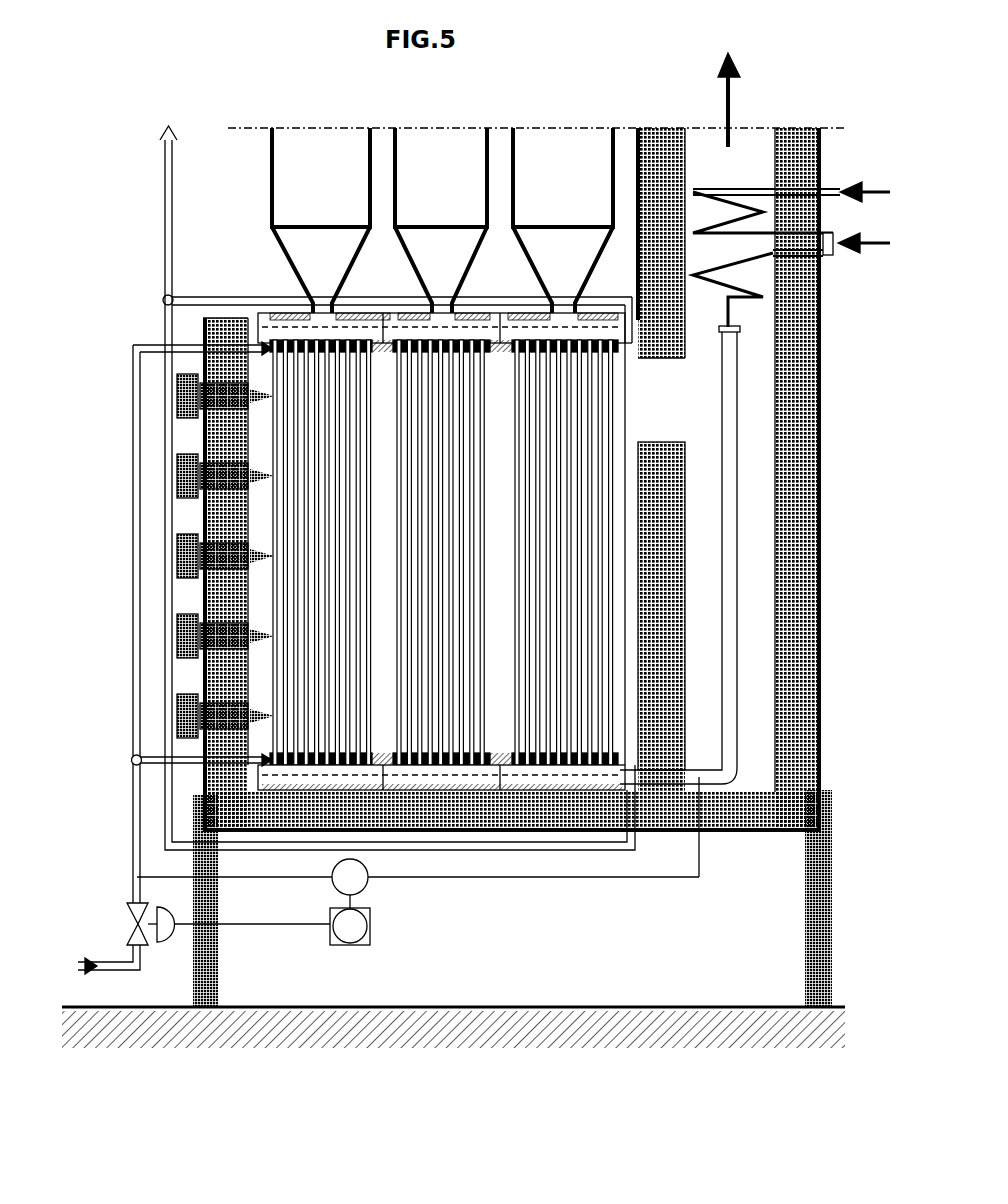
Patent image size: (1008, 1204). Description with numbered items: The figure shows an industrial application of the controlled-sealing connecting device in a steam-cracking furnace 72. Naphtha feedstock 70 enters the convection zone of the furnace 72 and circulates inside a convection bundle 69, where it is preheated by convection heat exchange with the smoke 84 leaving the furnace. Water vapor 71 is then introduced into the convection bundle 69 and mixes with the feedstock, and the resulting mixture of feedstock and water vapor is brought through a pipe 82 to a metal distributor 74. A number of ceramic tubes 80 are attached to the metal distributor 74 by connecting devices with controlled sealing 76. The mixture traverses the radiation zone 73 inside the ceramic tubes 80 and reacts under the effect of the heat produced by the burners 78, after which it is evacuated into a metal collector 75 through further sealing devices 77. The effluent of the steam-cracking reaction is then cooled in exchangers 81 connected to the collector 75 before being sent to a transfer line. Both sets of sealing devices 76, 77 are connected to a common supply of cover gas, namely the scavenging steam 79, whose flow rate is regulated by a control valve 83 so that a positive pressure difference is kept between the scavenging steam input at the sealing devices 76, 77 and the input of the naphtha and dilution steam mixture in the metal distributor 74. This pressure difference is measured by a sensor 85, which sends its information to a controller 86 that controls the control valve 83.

The convection bundle 69 is at (743, 208).
The naphtha feedstock 70 is at (888, 190).
The water vapor 71 is at (880, 252).
The furnace 72 is at (710, 255).
The radiation zone 73 is at (398, 614).
The metal distributor 74 is at (545, 785).
The metal collector 75 is at (300, 320).
The connecting devices with controlled sealing 76 is at (608, 772).
The sealing devices 77 is at (265, 330).
The burners 78 is at (196, 563).
The scavenging steam 79 is at (100, 965).
The ceramic tubes 80 is at (312, 525).
The exchangers 81 is at (318, 170).
The pipe 82 is at (728, 420).
The control valve 83 is at (165, 930).
The smoke 84 is at (729, 87).
The sensor 85 is at (361, 888).
The controller 86 is at (357, 927).